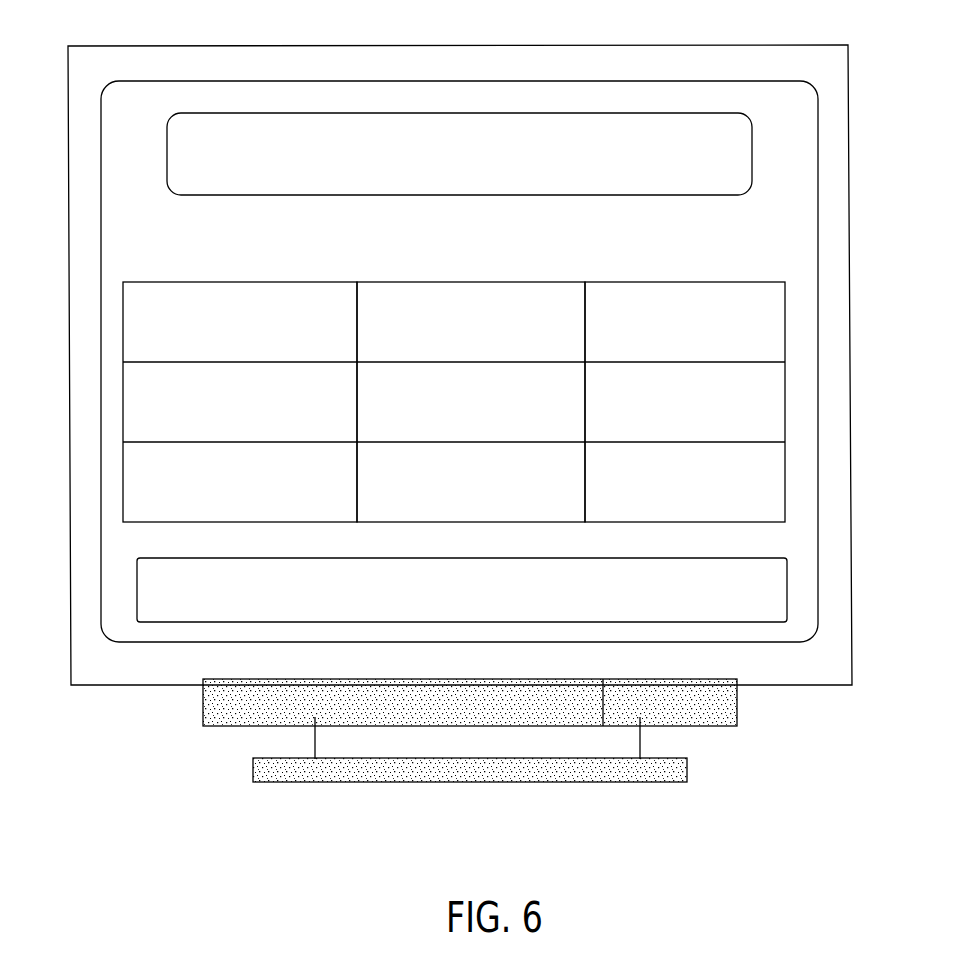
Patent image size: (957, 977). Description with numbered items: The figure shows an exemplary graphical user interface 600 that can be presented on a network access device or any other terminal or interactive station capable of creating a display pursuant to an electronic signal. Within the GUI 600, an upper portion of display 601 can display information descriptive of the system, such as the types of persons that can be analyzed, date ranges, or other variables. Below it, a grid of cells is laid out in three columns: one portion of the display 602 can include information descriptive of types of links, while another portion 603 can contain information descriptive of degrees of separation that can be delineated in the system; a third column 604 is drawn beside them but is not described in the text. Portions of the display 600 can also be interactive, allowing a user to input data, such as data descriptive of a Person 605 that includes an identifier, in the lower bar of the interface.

The graphical user interface 600 is at (163, 23).
The portion of display 601 is at (459, 154).
The portion of the display 602 is at (297, 268).
The portion 603 is at (525, 268).
The third column of content grid 604 is at (687, 268).
The Person 605 is at (462, 590).